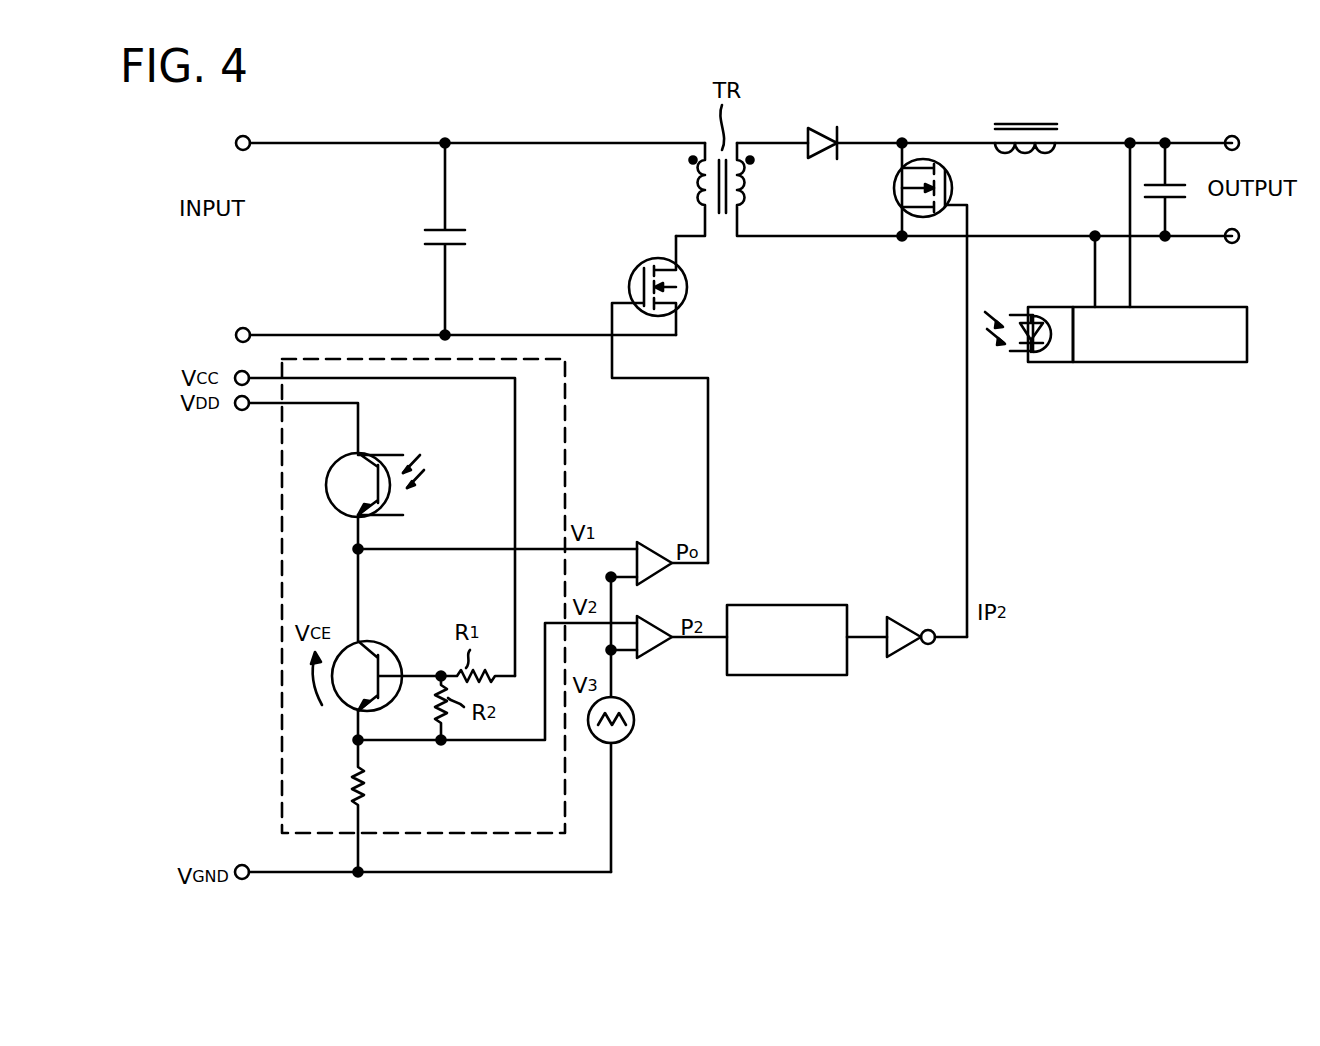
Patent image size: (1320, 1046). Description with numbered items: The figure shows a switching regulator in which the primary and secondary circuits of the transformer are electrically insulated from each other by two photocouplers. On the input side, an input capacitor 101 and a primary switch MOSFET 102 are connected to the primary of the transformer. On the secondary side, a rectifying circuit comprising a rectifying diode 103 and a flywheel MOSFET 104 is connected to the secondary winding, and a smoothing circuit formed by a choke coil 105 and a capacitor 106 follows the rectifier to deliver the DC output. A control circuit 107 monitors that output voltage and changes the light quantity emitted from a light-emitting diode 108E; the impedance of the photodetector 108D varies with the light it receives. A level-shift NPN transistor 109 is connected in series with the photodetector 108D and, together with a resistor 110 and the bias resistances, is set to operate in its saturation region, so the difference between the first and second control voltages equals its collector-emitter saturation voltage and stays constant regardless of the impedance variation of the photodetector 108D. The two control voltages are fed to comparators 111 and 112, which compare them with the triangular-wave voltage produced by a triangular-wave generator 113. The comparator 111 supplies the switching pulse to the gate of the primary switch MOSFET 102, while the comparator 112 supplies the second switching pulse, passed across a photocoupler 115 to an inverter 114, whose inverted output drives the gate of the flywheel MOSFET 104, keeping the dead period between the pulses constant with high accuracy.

The input capacitor 101 is at (466, 229).
The primary switch MOSFET 102 is at (688, 282).
The rectifying diode 103 is at (817, 126).
The flywheel MOSFET 104 is at (915, 162).
The choke coil 105 is at (1058, 137).
The capacitor 106 is at (1180, 185).
The control circuit 107 is at (1163, 362).
The photodetector 108D is at (326, 493).
The light-emitting diode 108E is at (1015, 355).
The level-shift transistor 109 is at (345, 707).
The resistor 110 is at (352, 788).
The comparator 111 is at (648, 540).
The comparator 112 is at (662, 657).
The triangular-wave generator 113 is at (636, 728).
The inverter 114 is at (904, 660).
The photocoupler 115 is at (787, 605).